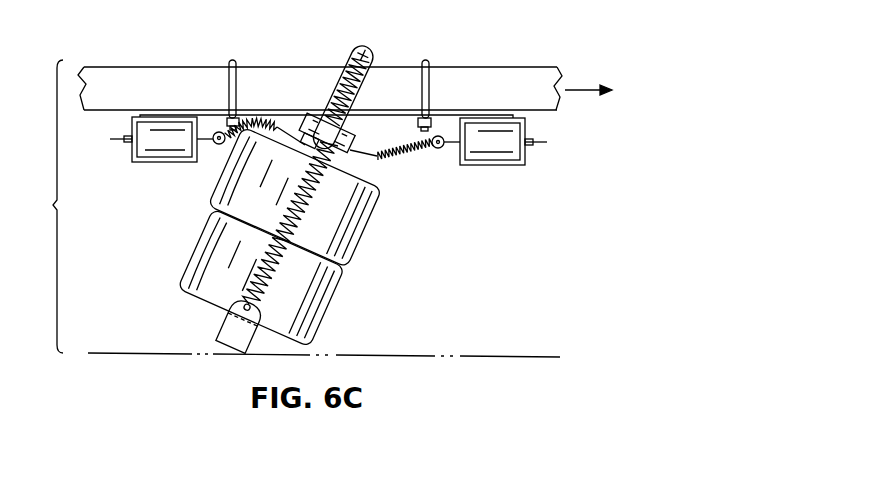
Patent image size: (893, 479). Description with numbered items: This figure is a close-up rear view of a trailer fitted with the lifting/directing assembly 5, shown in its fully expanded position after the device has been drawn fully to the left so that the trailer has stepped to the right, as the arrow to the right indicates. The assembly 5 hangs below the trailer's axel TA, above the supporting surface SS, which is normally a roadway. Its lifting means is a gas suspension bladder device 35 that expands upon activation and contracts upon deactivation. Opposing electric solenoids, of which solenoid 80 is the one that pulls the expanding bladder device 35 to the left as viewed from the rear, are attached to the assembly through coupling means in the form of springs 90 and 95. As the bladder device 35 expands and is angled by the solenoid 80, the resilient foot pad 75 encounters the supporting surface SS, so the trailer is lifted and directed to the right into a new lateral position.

The lifting/directing assembly 5 is at (48, 206).
The gas suspension bladder device 35 is at (357, 243).
The foot pad 75 is at (237, 343).
The electric solenoid 80 is at (157, 147).
The spring 90 is at (263, 115).
The spring 95 is at (405, 152).
The trailer axel TA is at (480, 82).
The supporting surface SS is at (478, 352).